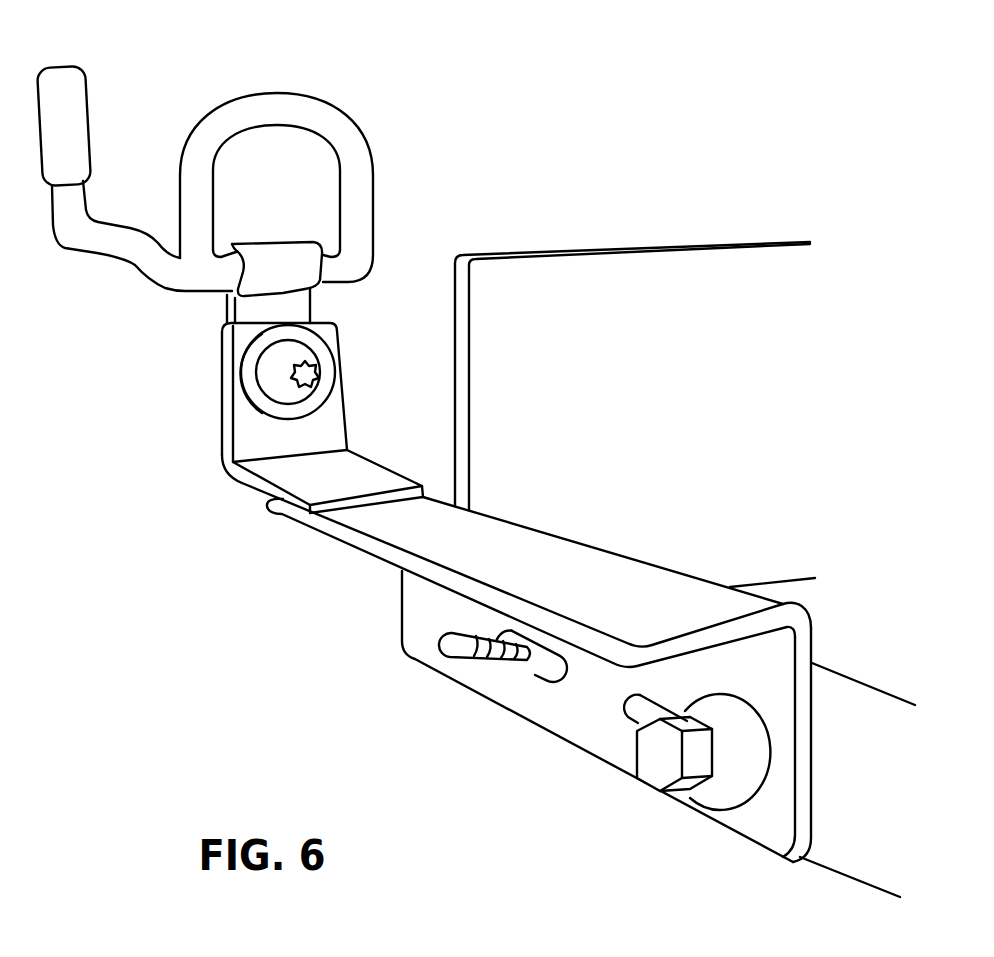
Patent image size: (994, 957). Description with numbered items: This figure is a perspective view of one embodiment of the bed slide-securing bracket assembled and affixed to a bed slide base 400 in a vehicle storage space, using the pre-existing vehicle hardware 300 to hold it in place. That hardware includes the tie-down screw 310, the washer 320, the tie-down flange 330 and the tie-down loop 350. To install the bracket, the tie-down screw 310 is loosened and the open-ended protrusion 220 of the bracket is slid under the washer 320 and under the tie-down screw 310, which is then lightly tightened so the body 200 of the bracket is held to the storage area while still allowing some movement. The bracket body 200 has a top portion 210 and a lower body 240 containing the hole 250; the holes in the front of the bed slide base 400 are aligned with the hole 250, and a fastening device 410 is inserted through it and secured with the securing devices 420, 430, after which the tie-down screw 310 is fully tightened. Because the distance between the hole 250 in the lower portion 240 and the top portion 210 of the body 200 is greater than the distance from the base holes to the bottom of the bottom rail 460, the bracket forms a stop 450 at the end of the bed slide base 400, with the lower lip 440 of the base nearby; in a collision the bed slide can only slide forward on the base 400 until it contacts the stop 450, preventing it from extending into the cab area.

The body of the bracket 200 is at (502, 592).
The top portion of the body 210 is at (373, 534).
The protrusion 220 is at (175, 401).
The lower body 240 is at (547, 720).
The hole 250 is at (530, 672).
The swivel hook assembly 300 is at (248, 174).
The tie-down screw 310 is at (268, 363).
The washer 320 is at (267, 339).
The tie-down flange 330 is at (292, 305).
The tie-down loop 350 is at (307, 108).
The bed slide base 400 is at (661, 204).
The fastening device 410 is at (452, 645).
The securing device 420 is at (715, 800).
The securing device 430 is at (656, 788).
The lower lip of wall 440 is at (860, 857).
The stop 450 is at (812, 641).
The bottom rail 460 is at (777, 583).